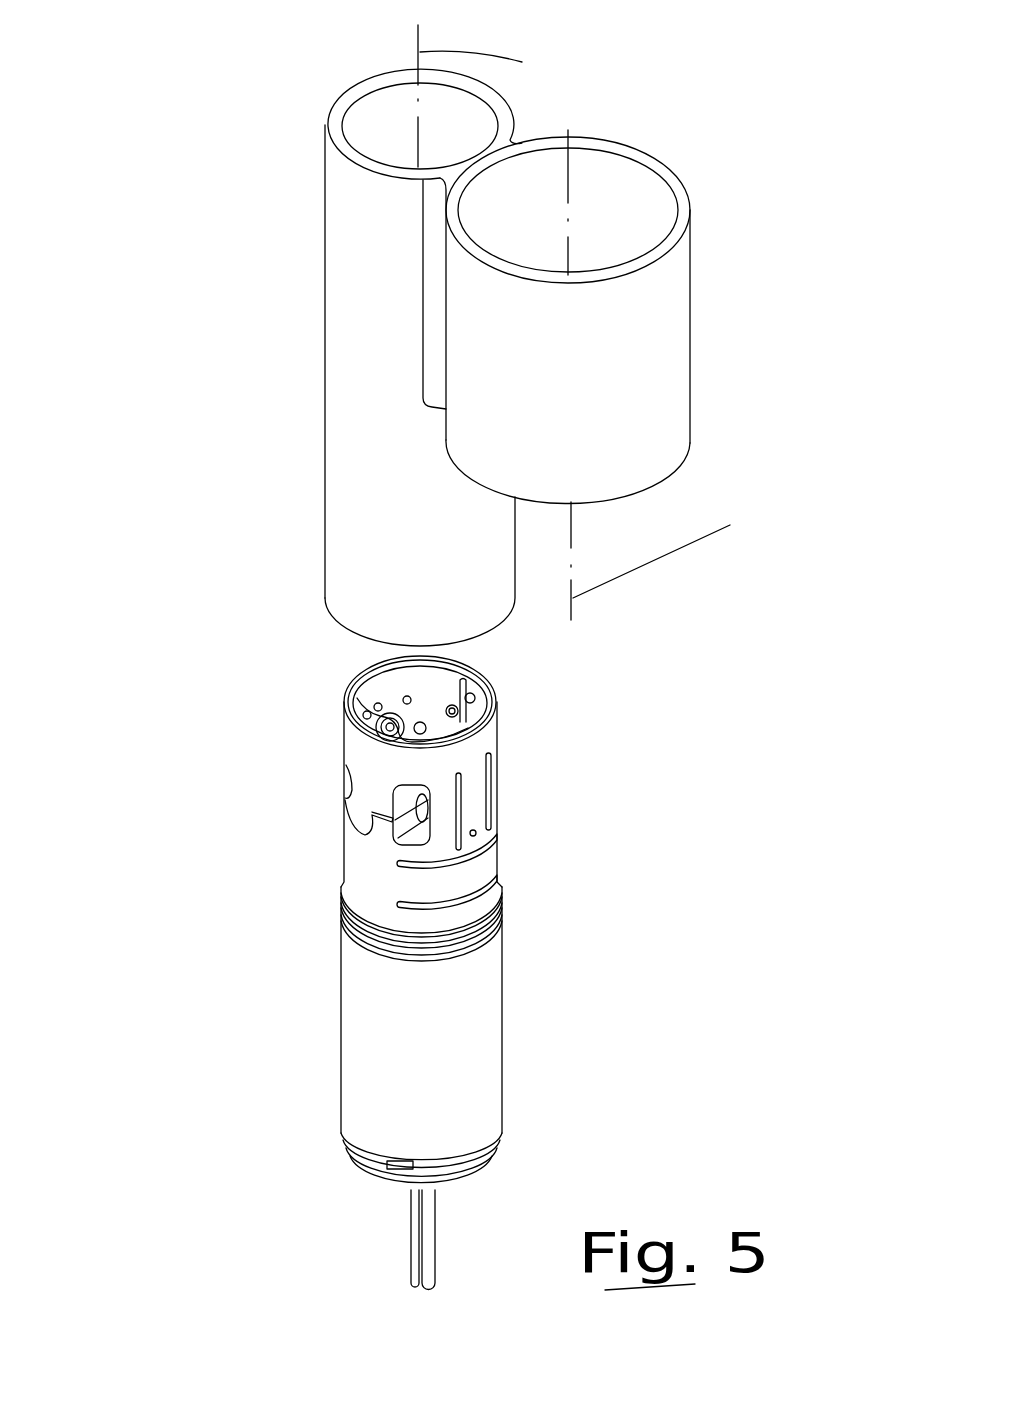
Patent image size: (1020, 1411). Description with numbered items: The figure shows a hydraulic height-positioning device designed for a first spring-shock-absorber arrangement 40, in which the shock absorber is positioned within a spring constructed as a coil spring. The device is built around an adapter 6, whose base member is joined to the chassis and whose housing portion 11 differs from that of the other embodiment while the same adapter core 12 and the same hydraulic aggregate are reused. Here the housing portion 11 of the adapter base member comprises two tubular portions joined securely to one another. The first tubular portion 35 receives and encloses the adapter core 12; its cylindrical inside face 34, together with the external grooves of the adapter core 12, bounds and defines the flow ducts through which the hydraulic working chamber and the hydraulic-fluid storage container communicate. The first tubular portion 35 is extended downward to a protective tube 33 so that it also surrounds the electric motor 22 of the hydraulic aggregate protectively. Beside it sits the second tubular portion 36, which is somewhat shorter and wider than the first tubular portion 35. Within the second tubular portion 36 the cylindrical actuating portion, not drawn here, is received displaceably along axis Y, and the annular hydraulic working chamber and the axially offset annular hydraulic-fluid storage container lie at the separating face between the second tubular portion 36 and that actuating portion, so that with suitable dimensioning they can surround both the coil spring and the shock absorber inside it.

The first spring-shock-absorber arrangement 40 is at (170, 291).
The housing portion 11 is at (513, 138).
The inside face 34 is at (375, 125).
The first tubular portion 35 is at (342, 203).
The protective tube 33 is at (340, 553).
The second tubular portion 36 is at (683, 292).
The adapter 6 is at (253, 725).
The adapter core 12 is at (555, 752).
The electric motor 22 is at (490, 1095).